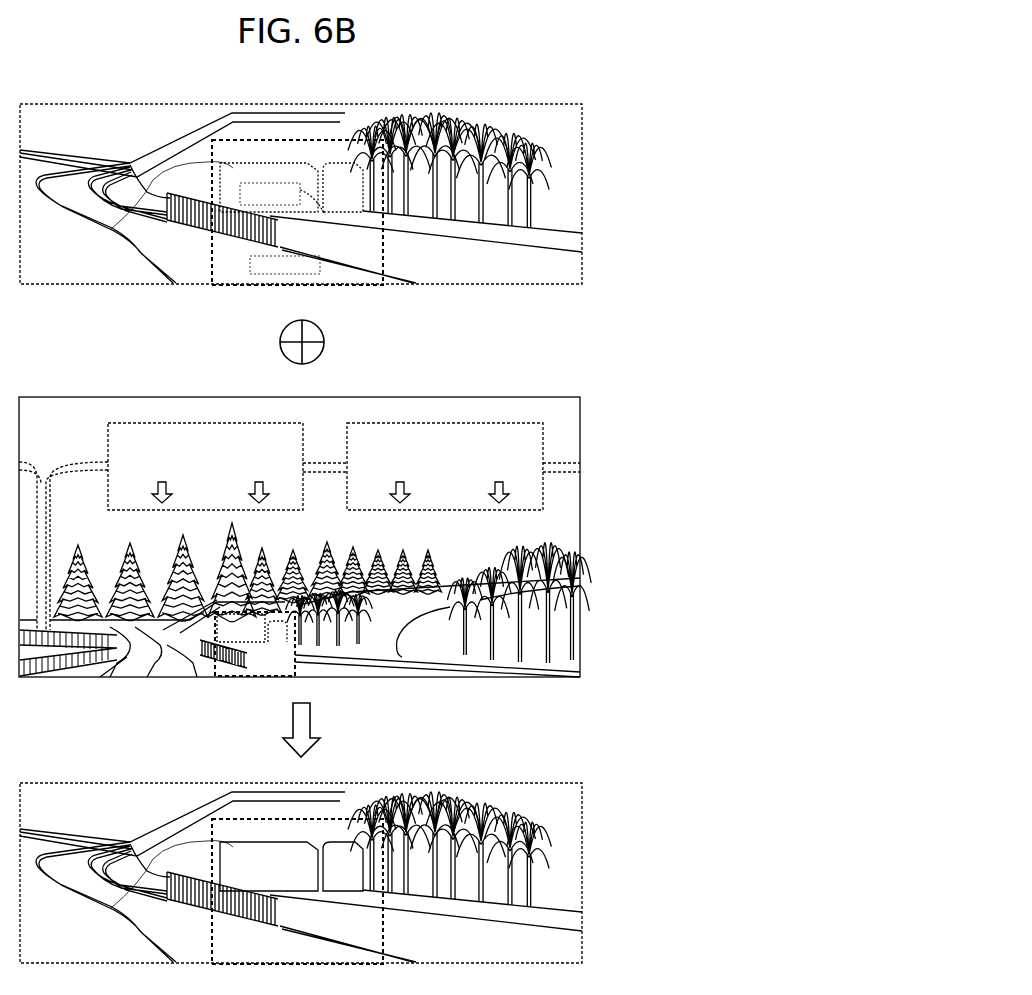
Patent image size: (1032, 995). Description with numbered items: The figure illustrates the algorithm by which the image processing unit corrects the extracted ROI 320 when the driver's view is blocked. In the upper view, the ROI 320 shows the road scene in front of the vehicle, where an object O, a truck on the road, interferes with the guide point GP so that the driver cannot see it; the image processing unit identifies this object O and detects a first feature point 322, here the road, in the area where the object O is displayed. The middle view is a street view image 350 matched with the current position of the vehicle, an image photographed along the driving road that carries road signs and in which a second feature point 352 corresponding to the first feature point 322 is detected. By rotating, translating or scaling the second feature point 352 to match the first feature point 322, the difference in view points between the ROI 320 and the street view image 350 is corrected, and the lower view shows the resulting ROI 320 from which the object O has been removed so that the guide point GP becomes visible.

The ROI 320 is at (568, 207).
The first feature point 322 is at (113, 236).
The street view image 350 is at (357, 679).
The second feature point 352 is at (167, 640).
The object O is at (290, 225).
The guide point GP is at (273, 897).